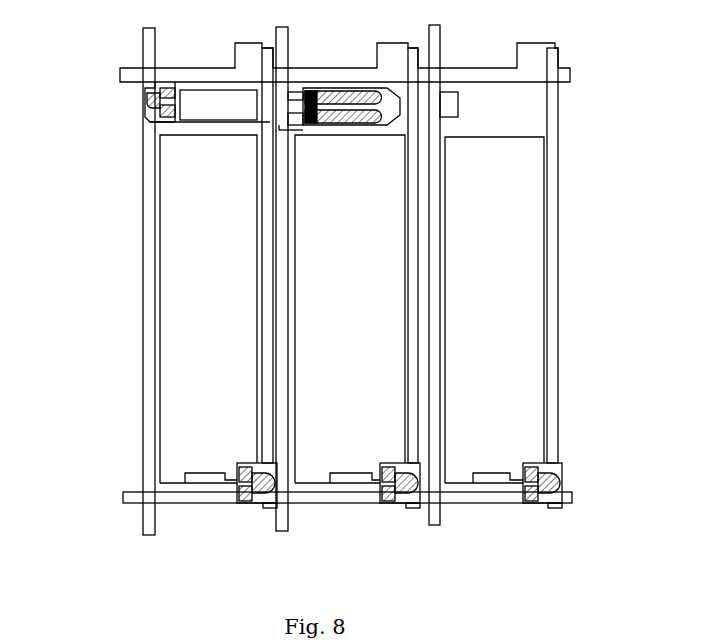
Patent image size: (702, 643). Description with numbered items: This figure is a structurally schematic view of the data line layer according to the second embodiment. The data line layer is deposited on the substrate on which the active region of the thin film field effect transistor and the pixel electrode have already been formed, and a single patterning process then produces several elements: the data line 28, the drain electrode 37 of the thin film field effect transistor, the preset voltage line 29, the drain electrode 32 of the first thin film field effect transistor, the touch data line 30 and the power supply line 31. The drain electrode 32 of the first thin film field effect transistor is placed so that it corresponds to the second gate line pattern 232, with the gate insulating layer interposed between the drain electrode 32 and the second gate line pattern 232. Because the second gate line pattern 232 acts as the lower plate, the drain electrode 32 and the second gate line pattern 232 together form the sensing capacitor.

The data line 28 is at (270, 500).
The preset voltage line 29 is at (152, 52).
The touch data line 30 is at (283, 50).
The power supply line 31 is at (432, 37).
The drain electrode of the first thin film field effect transistor 32 is at (212, 85).
The drain electrode of the thin film field effect transistor 37 is at (200, 482).
The second gate line pattern 232 is at (231, 97).